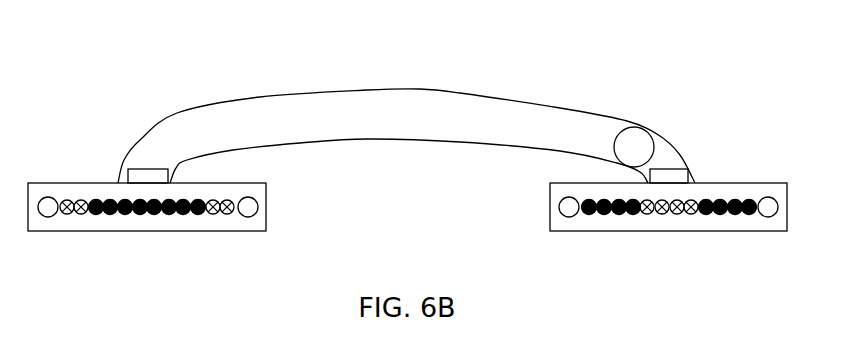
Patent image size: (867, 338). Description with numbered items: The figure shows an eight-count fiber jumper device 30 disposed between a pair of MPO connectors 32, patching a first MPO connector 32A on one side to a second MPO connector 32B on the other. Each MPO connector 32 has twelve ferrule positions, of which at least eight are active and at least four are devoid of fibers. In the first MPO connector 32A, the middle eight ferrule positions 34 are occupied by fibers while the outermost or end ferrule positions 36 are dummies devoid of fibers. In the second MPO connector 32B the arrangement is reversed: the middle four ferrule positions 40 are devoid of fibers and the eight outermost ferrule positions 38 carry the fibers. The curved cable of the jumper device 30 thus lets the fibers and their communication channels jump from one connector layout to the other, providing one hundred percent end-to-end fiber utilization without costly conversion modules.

The fiber jumper device 30 is at (217, 83).
The MPO connectors 32 is at (285, 207).
The first MPO connector 32A is at (254, 233).
The second MPO connector 32B is at (737, 196).
The middle eight ferrule positions 34 is at (92, 216).
The outermost ferrule positions 36 is at (88, 216).
The eight outermost ferrule positions 38 is at (582, 216).
The middle four ferrule positions 40 is at (645, 216).